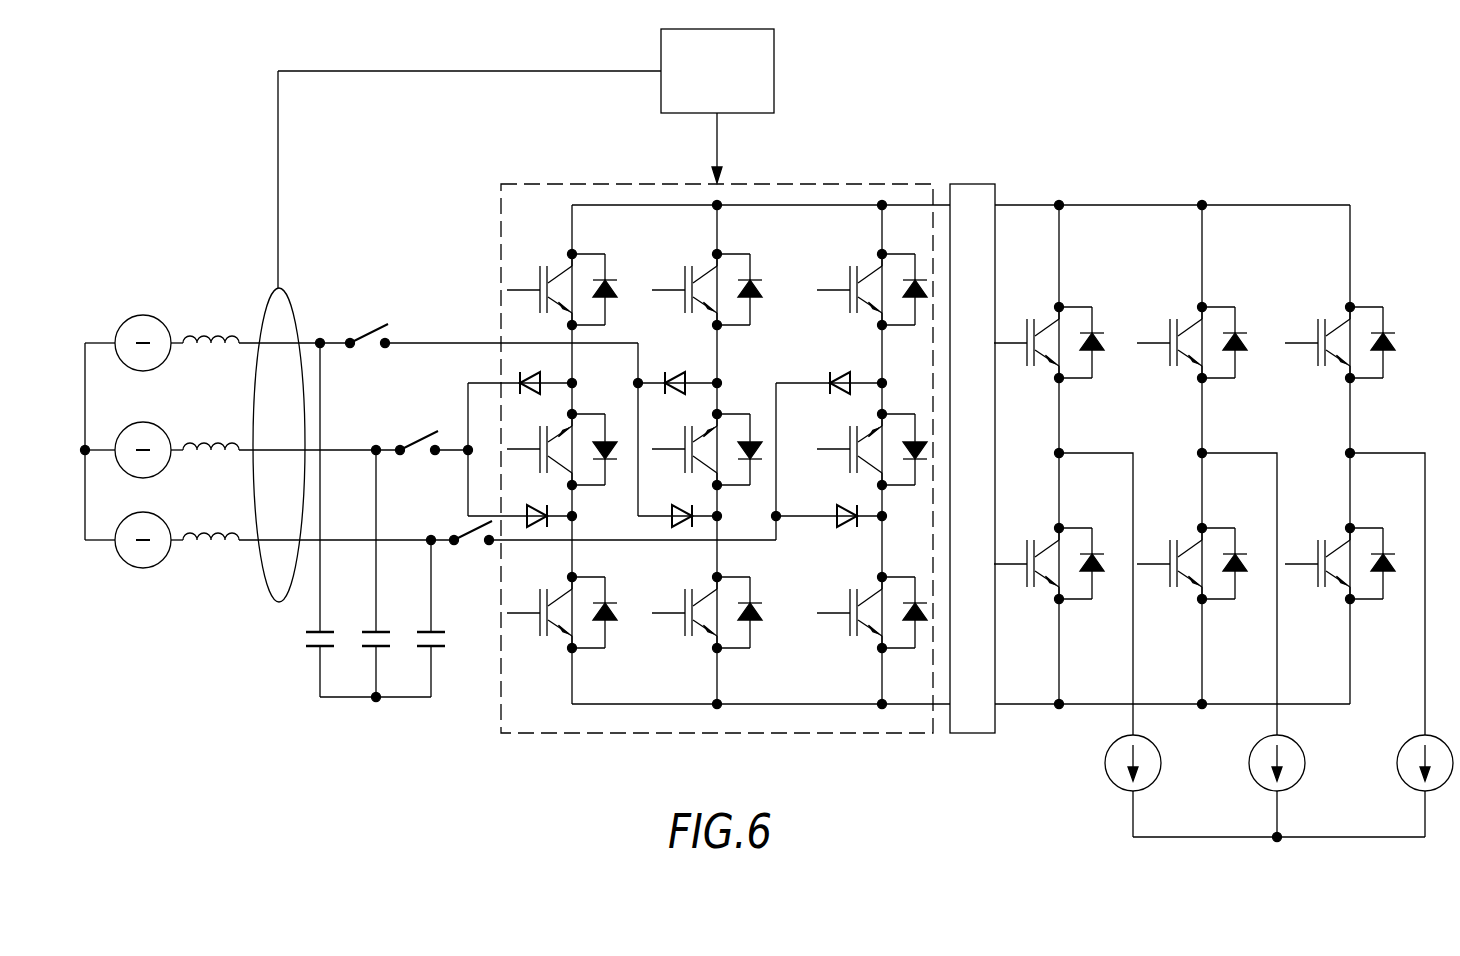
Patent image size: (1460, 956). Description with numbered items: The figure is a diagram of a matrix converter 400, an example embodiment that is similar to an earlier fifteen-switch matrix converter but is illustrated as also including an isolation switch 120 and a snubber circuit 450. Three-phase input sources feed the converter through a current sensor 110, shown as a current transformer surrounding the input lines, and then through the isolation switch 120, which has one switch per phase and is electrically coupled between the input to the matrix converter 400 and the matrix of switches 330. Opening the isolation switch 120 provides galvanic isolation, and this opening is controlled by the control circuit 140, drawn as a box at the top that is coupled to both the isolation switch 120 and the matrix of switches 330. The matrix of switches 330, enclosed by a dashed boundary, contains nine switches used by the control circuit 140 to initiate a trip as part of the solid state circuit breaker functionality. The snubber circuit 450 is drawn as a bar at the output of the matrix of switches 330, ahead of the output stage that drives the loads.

The matrix converter 400 is at (218, 109).
The current sensor 110 is at (278, 602).
The isolation switch 120 is at (369, 312).
The control circuit 140 is at (774, 81).
The matrix of switches 330 is at (843, 183).
The snubber circuit 450 is at (980, 184).